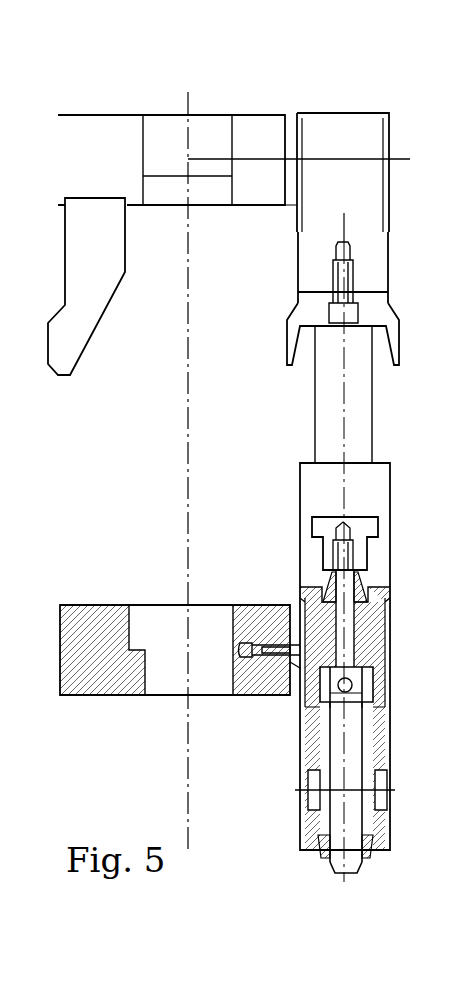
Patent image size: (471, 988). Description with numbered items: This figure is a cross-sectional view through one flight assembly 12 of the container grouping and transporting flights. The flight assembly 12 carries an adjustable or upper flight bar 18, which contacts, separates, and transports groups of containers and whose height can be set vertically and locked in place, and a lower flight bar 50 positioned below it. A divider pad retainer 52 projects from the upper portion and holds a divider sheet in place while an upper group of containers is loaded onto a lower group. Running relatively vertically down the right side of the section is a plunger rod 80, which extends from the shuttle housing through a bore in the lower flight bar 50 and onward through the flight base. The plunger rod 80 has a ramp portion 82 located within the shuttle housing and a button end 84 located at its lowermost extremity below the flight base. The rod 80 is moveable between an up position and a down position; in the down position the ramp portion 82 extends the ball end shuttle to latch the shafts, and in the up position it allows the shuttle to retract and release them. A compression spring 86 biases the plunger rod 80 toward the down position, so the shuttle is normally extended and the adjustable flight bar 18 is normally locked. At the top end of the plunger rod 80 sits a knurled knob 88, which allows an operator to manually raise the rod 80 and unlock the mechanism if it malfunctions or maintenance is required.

The flight assembly 12 is at (347, 104).
The adjustable flight bar 18 is at (267, 113).
The lower flight bar 50 is at (247, 695).
The divider pad retainer 52 is at (100, 318).
The plunger rod 80 is at (350, 748).
The ramp portion 82 is at (352, 690).
The button end 84 is at (367, 870).
The compression spring 86 is at (330, 636).
The knurled knob 88 is at (358, 515).